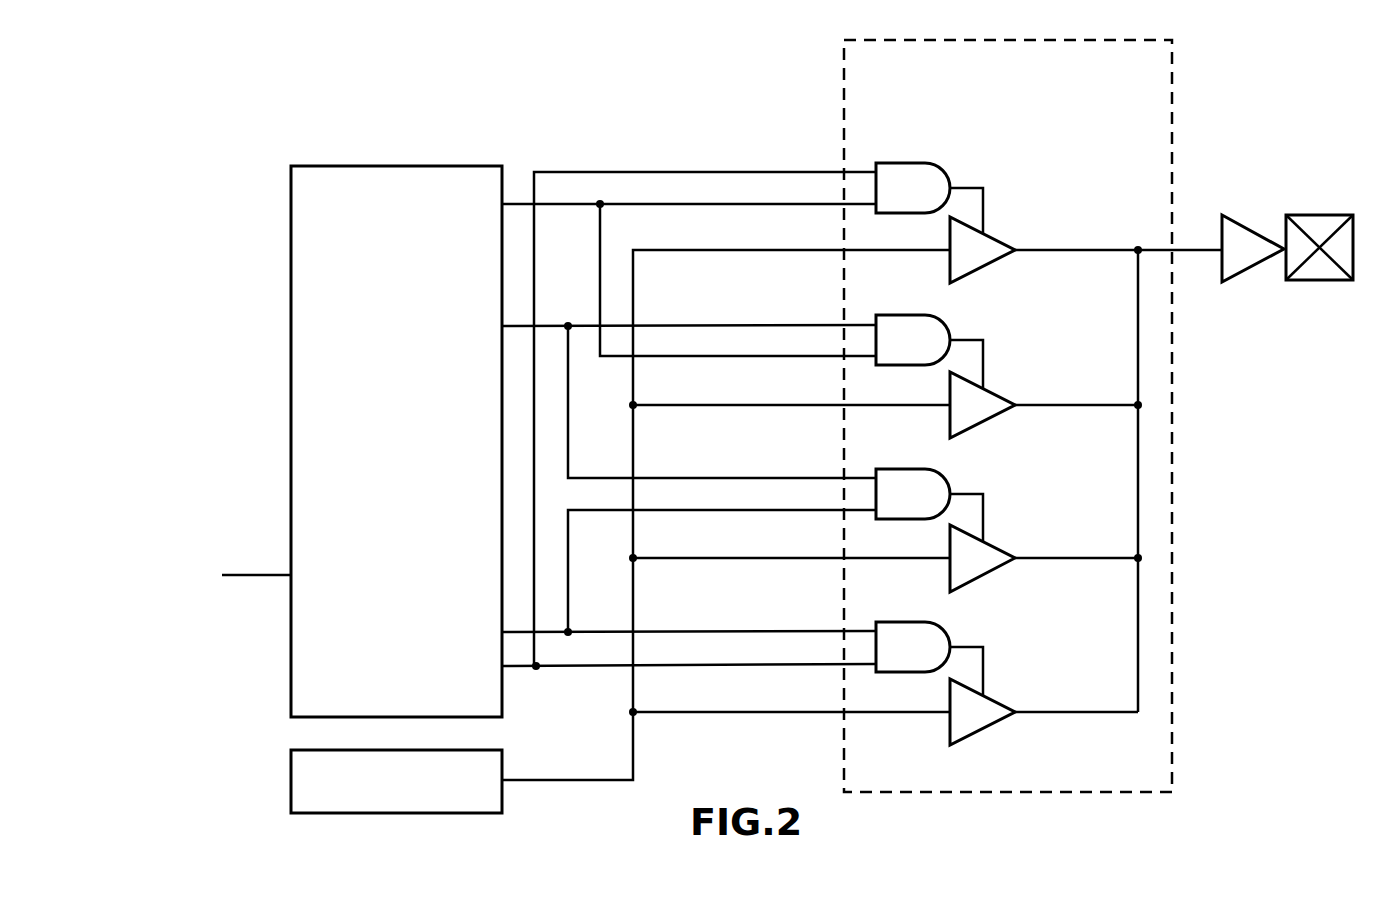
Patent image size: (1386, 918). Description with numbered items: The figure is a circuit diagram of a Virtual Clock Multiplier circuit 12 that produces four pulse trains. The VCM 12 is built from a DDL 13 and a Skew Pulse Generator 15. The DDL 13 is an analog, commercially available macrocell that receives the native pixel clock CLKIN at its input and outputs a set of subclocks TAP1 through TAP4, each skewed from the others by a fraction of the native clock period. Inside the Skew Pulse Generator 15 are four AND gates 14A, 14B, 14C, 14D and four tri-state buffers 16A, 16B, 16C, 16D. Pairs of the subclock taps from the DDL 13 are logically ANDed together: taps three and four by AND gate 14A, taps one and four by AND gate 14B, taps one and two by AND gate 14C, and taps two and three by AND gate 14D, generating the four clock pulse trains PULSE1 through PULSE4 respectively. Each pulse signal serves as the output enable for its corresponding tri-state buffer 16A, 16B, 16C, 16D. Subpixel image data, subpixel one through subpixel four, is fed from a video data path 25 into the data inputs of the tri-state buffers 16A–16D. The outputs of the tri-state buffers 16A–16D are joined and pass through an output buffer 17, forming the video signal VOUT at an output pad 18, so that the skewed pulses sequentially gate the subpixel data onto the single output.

The Virtual Clock Multiplier circuit 12 is at (350, 49).
The DDL 13 is at (452, 166).
The AND gate 14A is at (910, 163).
The AND gate 14B is at (910, 315).
The AND gate 14C is at (910, 469).
The AND gate 14D is at (910, 622).
The Skew Pulse Generator 15 is at (1172, 95).
The tri-state buffer 16A is at (983, 268).
The tri-state buffer 16B is at (983, 423).
The tri-state buffer 16C is at (983, 576).
The tri-state buffer 16D is at (983, 729).
The output buffer 17 is at (1257, 233).
The output pad 18 is at (1320, 215).
The video data path 25 is at (291, 781).